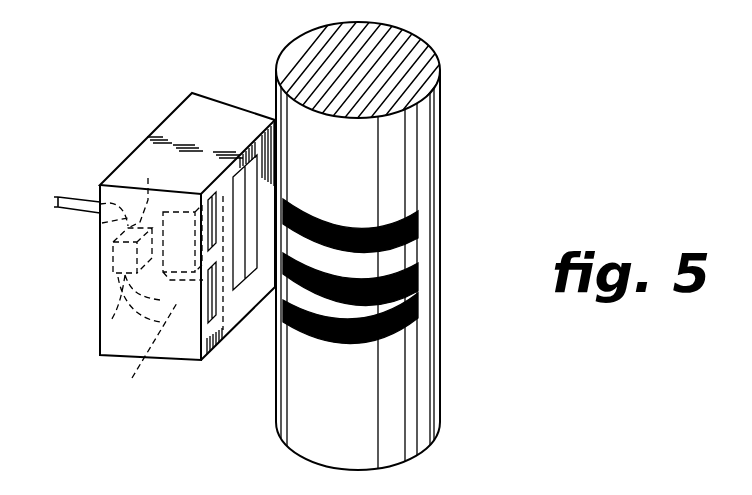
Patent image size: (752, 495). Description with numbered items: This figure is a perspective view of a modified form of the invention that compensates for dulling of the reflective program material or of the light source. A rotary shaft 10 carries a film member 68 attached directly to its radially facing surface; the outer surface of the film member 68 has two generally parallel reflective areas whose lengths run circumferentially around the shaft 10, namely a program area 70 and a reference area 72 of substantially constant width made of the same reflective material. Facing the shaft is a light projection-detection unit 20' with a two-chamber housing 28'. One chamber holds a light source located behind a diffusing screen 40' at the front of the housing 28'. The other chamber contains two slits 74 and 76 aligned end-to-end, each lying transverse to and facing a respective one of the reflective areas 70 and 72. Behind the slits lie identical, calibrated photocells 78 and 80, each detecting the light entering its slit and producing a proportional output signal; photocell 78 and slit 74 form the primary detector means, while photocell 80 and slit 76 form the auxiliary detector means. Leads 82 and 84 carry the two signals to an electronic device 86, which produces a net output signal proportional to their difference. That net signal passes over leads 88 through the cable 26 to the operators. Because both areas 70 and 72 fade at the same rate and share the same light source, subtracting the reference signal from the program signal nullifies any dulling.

The shaft 10 is at (423, 110).
The light projection-detection unit 20' is at (187, 196).
The cable 26 is at (62, 196).
The two-chamber housing 28' is at (180, 113).
The diffusing screen 40' is at (259, 184).
The film member 68 is at (423, 275).
The program area 70 is at (327, 336).
The reference area 72 is at (413, 243).
The slit 74 is at (218, 306).
The slit 76 is at (224, 213).
The photocell 78 is at (148, 356).
The photocell 80 is at (198, 186).
The lead 82 is at (112, 322).
The lead 84 is at (146, 192).
The electronic device 86 is at (112, 268).
The leads 88 is at (112, 226).